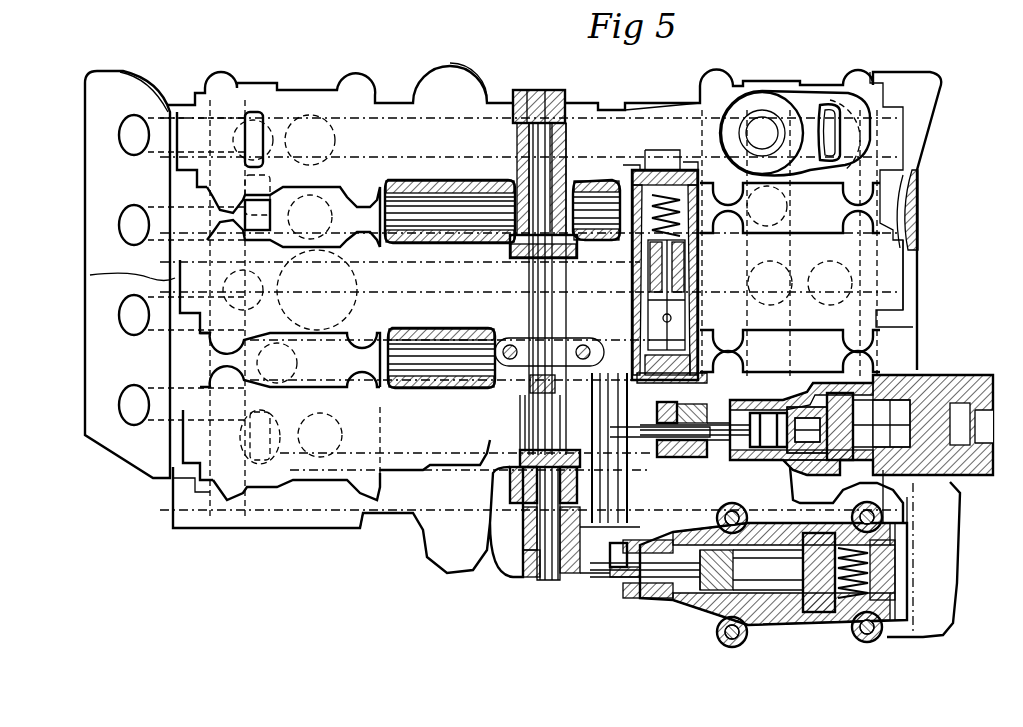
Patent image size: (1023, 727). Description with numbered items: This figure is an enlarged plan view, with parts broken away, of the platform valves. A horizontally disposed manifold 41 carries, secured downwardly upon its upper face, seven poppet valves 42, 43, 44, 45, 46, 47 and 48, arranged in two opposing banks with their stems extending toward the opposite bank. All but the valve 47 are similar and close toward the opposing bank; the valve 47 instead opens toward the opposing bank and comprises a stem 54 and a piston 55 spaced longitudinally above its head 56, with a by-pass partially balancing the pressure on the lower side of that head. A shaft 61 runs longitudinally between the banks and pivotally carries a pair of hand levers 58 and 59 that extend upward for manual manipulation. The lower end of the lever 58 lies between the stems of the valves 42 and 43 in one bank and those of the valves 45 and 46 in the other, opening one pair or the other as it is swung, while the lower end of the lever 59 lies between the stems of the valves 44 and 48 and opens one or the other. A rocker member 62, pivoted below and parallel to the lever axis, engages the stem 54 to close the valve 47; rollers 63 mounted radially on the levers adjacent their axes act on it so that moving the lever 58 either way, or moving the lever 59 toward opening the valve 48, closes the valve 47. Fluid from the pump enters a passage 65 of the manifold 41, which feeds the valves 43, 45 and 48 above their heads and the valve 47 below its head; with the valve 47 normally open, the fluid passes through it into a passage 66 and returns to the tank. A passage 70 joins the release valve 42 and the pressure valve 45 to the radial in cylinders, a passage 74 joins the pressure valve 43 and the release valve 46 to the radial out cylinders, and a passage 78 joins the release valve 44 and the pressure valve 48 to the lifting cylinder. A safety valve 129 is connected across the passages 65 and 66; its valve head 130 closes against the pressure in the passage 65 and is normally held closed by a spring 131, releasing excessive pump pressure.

The manifold 41 is at (920, 325).
The release valve 42 is at (283, 84).
The pressure valve 43 is at (95, 278).
The release valve 44 is at (212, 490).
The pressure valve 45 is at (663, 110).
The release valve 46 is at (905, 282).
The valve 47 is at (883, 373).
The pressure valve 48 is at (798, 628).
The stem 54 is at (660, 422).
The piston 55 is at (770, 450).
The head 56 is at (815, 457).
The hand lever 58 is at (568, 160).
The hand lever 59 is at (575, 455).
The shaft 61 is at (556, 95).
The rocker member 62 is at (605, 530).
The rollers 63 is at (545, 492).
The passage 65 is at (422, 372).
The passage 66 is at (395, 180).
The passage 70 is at (490, 110).
The passage 74 is at (905, 250).
The passage 78 is at (392, 515).
The safety valve 129 is at (795, 154).
The valve head 130 is at (698, 262).
The spring 131 is at (648, 150).